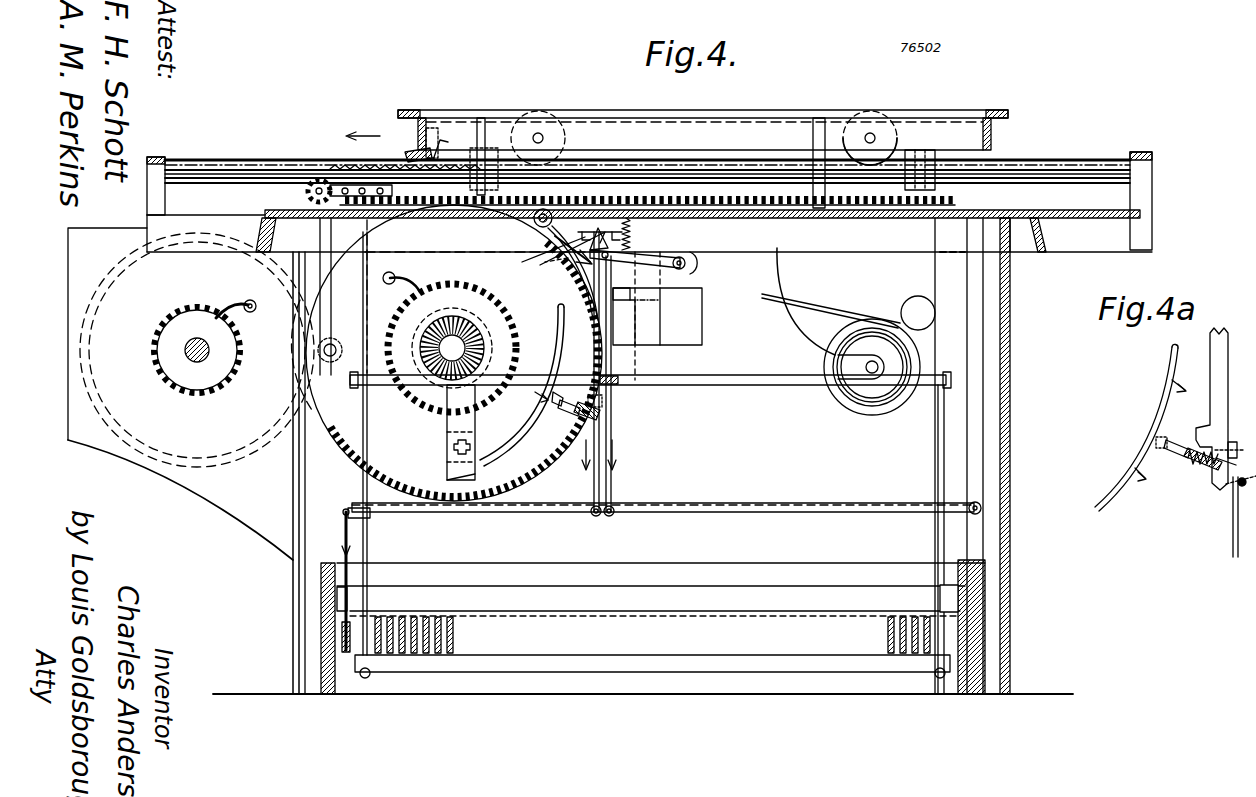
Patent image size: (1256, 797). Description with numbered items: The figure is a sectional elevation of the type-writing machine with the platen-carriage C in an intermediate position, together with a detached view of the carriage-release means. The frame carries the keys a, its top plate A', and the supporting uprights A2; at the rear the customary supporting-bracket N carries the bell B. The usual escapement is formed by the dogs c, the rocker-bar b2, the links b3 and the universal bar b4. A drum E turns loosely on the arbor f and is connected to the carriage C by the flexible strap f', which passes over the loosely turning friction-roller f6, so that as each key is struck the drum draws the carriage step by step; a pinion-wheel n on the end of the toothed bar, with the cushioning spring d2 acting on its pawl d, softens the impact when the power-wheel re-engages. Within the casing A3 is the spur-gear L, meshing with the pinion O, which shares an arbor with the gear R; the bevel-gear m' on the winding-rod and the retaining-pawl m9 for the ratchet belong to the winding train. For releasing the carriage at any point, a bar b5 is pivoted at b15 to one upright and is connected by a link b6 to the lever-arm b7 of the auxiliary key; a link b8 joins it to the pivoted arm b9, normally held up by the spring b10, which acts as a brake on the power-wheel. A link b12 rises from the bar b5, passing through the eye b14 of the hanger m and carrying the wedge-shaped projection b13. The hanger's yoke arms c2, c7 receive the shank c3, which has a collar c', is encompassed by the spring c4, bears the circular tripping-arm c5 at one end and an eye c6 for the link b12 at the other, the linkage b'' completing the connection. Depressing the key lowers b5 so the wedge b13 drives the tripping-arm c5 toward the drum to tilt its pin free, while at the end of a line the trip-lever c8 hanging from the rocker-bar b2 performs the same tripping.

In FIG. 4, the platen-carriage C is at (660, 128).
In FIG. 4, the keys a is at (930, 196).
In FIG. 4, the feed rack d is at (412, 155).
In FIG. 4, the spring d2 is at (438, 152).
In FIG. 4, the pinion-wheel n is at (308, 196).
In FIG. 4, the top plate A' is at (664, 202).
In FIG. 4, the uprights A2 is at (245, 506).
In FIG. 4, the casing A3 is at (205, 442).
In FIG. 4, the spur-gear L is at (190, 470).
In FIG. 4, the gear R is at (282, 418).
In FIG. 4, the bevel-gear m' is at (181, 350).
In FIG. 4, the retaining-pawl m9 is at (247, 300).
In FIG. 4, the drum E is at (460, 254).
In FIG. 4, the pinion O is at (330, 371).
In FIG. 4, the collar c' is at (449, 342).
In FIG. 4A, the collar c' is at (1177, 490).
In FIG. 4, the arbor f is at (463, 348).
In FIG. 4, the rocker-bar b2 is at (748, 376).
In FIG. 4, the trip-lever c8 is at (447, 466).
In FIG. 4, the tripping-arm c5 is at (538, 426).
In FIG. 4A, the tripping-arm c5 is at (1162, 404).
In FIG. 4, the shank c3 is at (563, 414).
In FIG. 4A, the shank c3 is at (1182, 442).
In FIG. 4, the wedge-shaped projection b13 is at (604, 412).
In FIG. 4, the friction-roller f6 is at (536, 226).
In FIG. 4, the flexible strap f' is at (643, 252).
In FIG. 4, the arm b'' is at (569, 262).
In FIG. 4, the hanger m is at (619, 372).
In FIG. 4A, the hanger m is at (1209, 409).
In FIG. 4, the link b8 is at (613, 438).
In FIG. 4, the pivoted arm b9 is at (668, 258).
In FIG. 4, the spring b10 is at (652, 250).
In FIG. 4, the supporting-bracket N is at (702, 312).
In FIG. 4, the dogs c is at (644, 316).
In FIG. 4, the bell B is at (856, 412).
In FIG. 4, the link b12 is at (598, 478).
In FIG. 4A, the link b12 is at (1233, 546).
In FIG. 4, the bar b5 is at (722, 512).
In FIG. 4, the pivot b15 is at (972, 504).
In FIG. 4, the links b3 is at (938, 470).
In FIG. 4, the link b6 is at (350, 568).
In FIG. 4, the lever-arm b7 is at (342, 636).
In FIG. 4, the universal bar b4 is at (604, 660).
In FIG. 4A, the yoke arm c7 is at (1205, 470).
In FIG. 4A, the eye c6 is at (1226, 478).
In FIG. 4A, the yoke arm c2 is at (1175, 462).
In FIG. 4A, the spring c4 is at (1195, 466).
In FIG. 4A, the eye b14 is at (1234, 442).